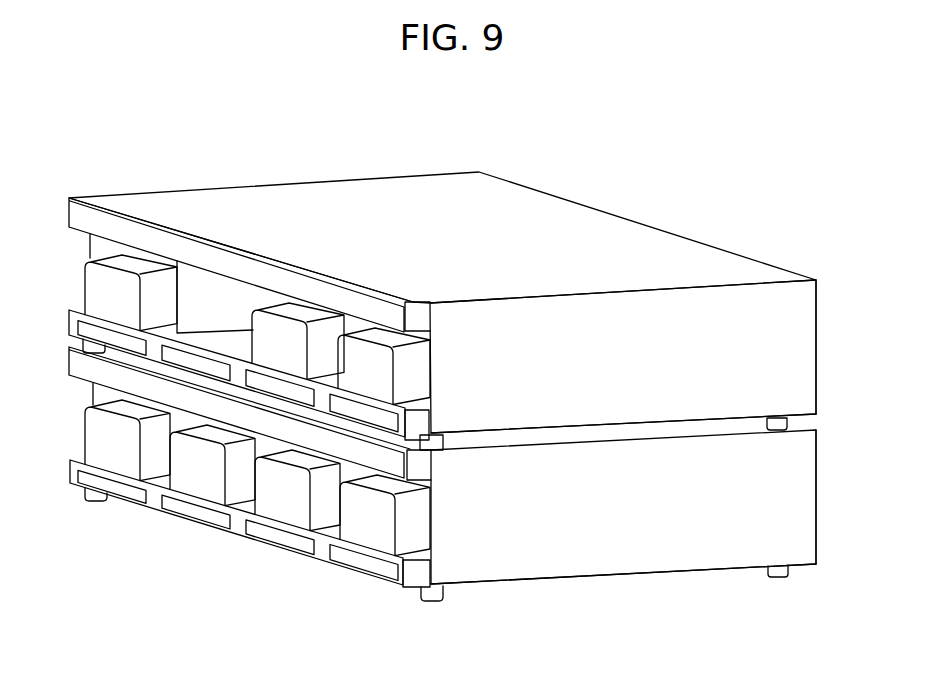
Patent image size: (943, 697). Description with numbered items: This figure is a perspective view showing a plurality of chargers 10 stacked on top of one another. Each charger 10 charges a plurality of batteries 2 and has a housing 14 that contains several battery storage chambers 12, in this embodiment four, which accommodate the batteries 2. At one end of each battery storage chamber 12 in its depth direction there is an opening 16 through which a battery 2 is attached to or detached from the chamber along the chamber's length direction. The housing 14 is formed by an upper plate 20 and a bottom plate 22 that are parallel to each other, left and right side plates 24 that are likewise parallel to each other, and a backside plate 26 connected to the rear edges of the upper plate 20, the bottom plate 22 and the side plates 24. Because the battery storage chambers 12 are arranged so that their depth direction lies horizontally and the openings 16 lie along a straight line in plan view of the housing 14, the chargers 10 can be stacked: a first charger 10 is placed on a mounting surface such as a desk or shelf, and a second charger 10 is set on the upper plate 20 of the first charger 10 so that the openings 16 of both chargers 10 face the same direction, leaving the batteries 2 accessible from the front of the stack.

The charger 10 is at (714, 194).
The housing 14 is at (513, 225).
The upper plate 20 is at (661, 409).
The side plate 24 is at (786, 303).
The backside plate 26 is at (817, 343).
The bottom plate 22 is at (650, 427).
The battery storage chamber 12 is at (246, 303).
The battery 2 is at (121, 262).
The opening 16 is at (207, 279).